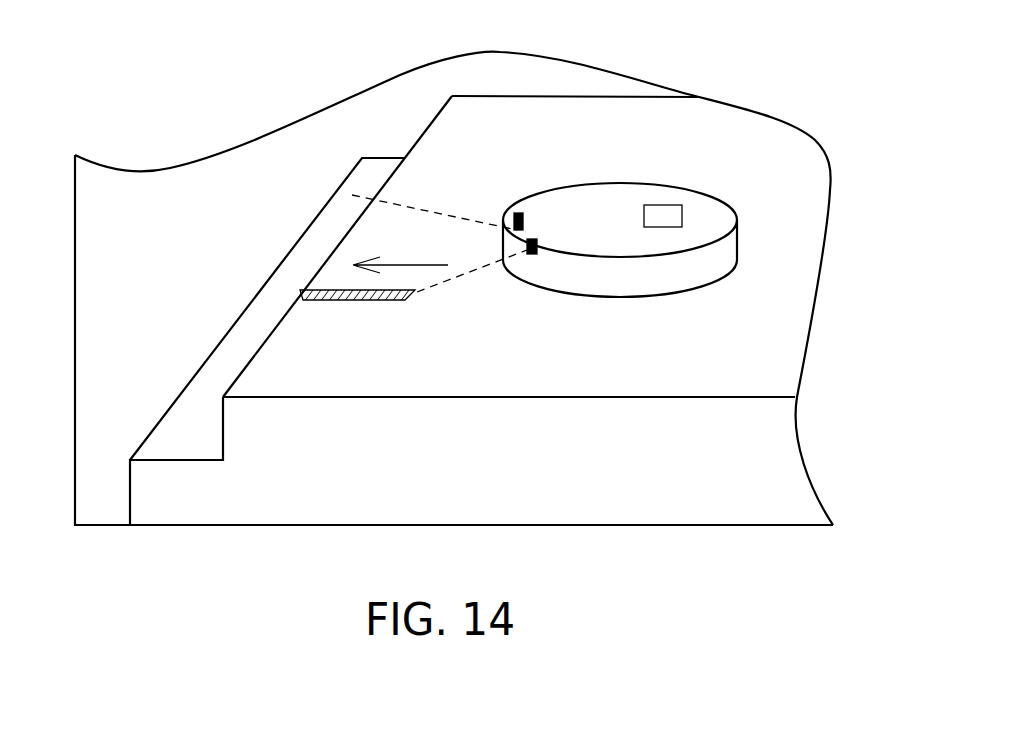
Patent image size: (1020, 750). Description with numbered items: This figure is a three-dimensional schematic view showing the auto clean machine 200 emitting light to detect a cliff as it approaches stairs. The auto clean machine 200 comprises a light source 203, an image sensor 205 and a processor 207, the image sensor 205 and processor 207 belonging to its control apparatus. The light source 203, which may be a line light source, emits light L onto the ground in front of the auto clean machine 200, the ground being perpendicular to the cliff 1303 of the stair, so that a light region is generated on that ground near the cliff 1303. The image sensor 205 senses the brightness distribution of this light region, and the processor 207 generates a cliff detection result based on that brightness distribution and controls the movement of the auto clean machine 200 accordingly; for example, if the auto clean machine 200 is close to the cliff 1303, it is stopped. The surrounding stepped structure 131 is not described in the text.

The housing 131 is at (775, 175).
The cliff 1303 is at (222, 428).
The auto clean machine 200 is at (600, 217).
The light source 203 is at (533, 238).
The image sensor 205 is at (518, 212).
The processor 207 is at (662, 228).
The light L is at (439, 243).